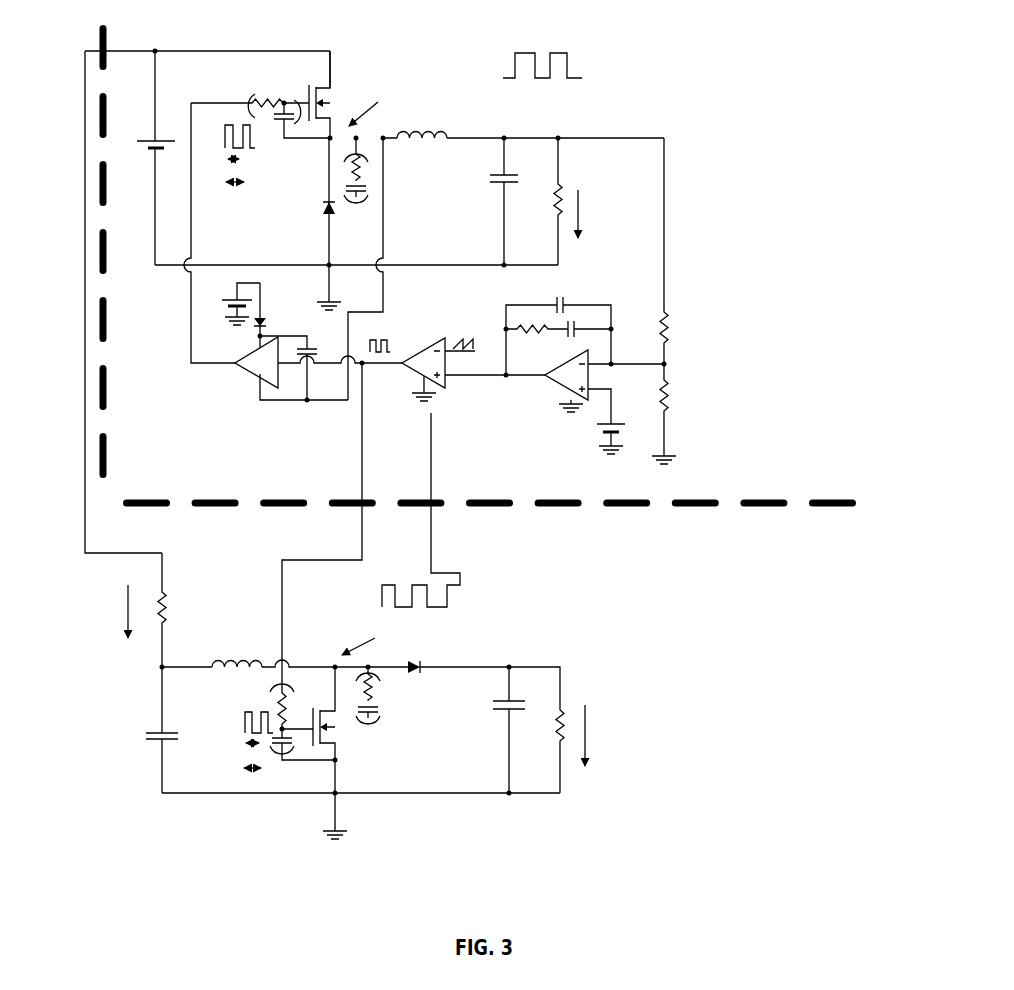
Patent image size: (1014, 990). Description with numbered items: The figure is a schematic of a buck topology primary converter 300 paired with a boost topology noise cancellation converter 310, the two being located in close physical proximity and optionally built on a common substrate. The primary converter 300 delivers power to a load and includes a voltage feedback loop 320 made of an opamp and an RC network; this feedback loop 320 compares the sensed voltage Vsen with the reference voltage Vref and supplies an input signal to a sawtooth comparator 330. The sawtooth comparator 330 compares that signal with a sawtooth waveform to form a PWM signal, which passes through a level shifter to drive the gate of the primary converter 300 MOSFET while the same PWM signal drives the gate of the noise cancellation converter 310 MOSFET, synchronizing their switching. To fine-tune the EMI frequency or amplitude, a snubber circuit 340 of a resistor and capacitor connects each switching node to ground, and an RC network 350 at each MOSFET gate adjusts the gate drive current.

The primary converter 300 is at (786, 548).
The noise cancellation converter 310 is at (471, 601).
The voltage feedback loop 320 is at (554, 365).
The sawtooth comparator 330 is at (451, 399).
The snubber circuit 340 is at (372, 177).
The RC network 350 is at (253, 91).